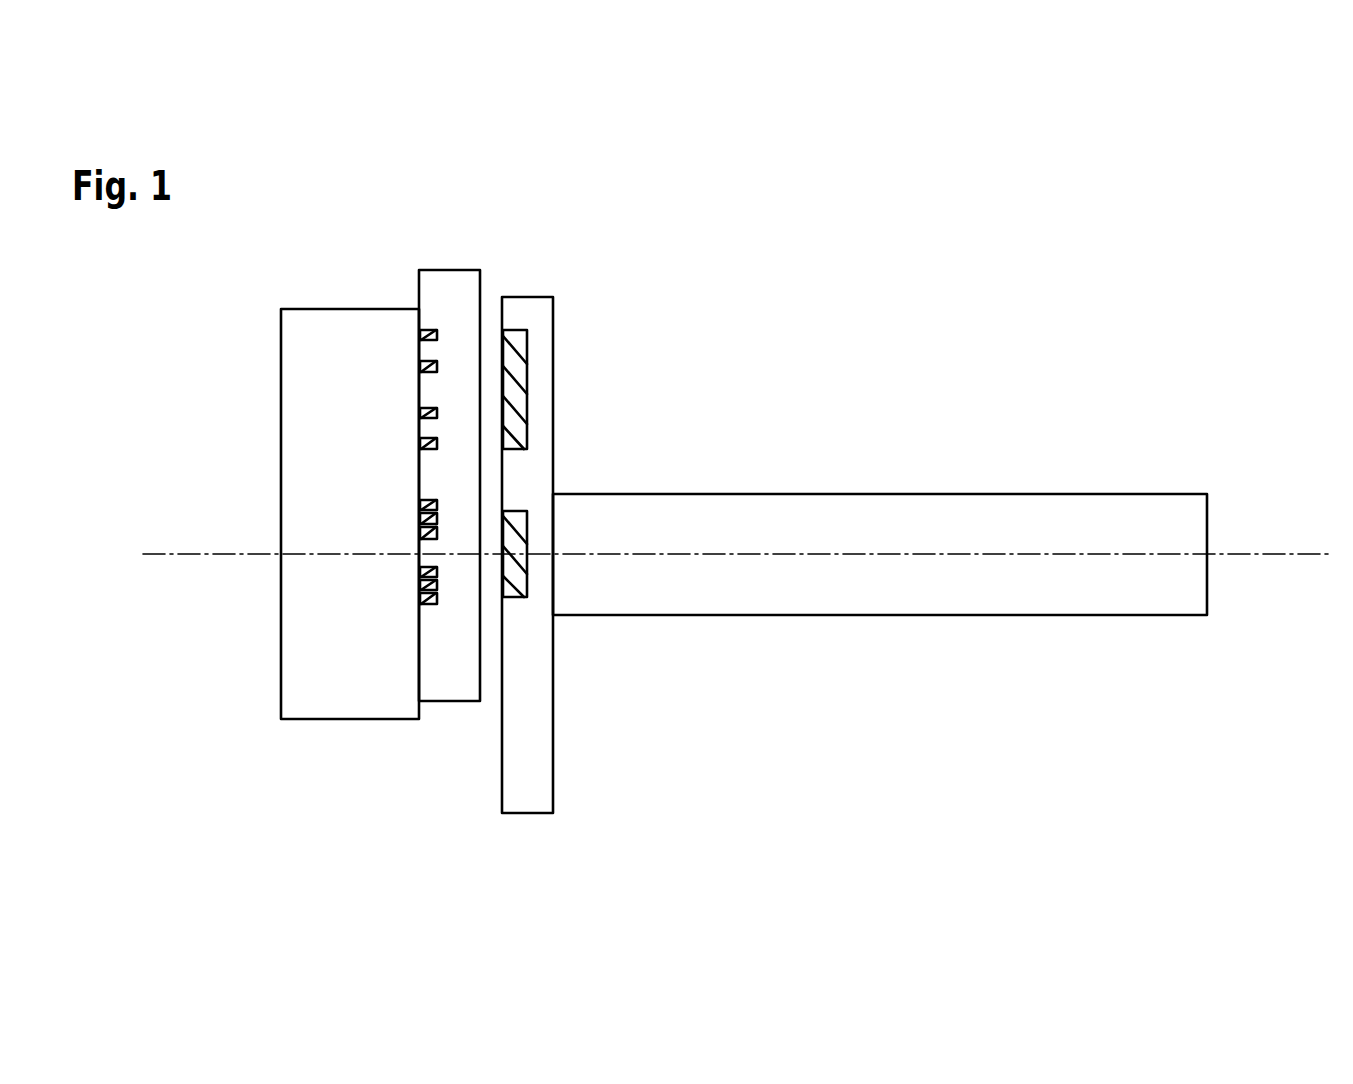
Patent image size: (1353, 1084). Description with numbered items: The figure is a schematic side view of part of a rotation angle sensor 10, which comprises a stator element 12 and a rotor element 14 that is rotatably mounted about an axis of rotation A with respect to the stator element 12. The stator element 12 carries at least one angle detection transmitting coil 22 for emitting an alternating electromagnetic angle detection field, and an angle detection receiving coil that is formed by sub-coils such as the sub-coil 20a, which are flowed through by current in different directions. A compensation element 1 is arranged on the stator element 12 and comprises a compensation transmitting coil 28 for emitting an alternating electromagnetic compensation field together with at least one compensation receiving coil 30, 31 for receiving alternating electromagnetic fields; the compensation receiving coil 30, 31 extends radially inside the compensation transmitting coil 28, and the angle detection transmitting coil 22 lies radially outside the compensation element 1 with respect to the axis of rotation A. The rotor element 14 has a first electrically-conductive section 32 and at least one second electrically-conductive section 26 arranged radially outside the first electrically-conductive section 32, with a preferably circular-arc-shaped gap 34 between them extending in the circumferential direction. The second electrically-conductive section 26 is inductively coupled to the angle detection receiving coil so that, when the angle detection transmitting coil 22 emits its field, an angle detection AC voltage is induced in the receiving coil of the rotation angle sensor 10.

The compensation element 1 is at (228, 420).
The rotation angle sensor 10 is at (982, 293).
The stator element 12 is at (358, 733).
The rotor element 14 is at (723, 360).
The sub-coil 20a is at (421, 414).
The angle detection transmitting coil 22 is at (422, 334).
The second electrically-conductive section 26 is at (512, 337).
The compensation transmitting coil 28 is at (421, 503).
The compensation receiving coil 30 is at (421, 518).
The compensation receiving coil 31 is at (421, 531).
The first electrically-conductive section 32 is at (515, 528).
The gap 34 is at (528, 470).
The axis of rotation A is at (177, 558).